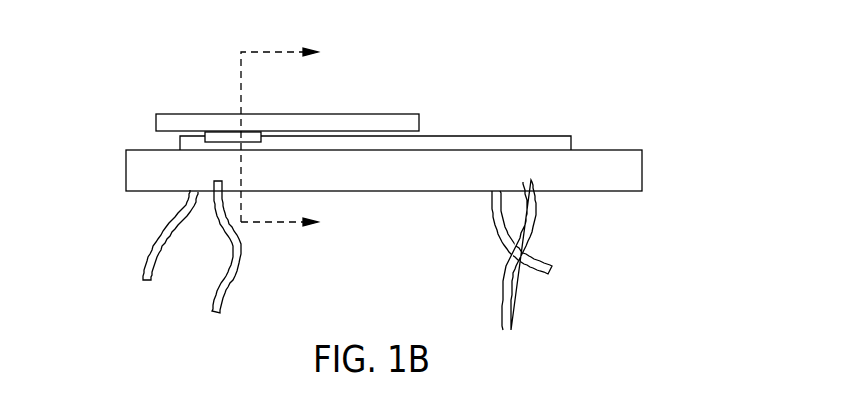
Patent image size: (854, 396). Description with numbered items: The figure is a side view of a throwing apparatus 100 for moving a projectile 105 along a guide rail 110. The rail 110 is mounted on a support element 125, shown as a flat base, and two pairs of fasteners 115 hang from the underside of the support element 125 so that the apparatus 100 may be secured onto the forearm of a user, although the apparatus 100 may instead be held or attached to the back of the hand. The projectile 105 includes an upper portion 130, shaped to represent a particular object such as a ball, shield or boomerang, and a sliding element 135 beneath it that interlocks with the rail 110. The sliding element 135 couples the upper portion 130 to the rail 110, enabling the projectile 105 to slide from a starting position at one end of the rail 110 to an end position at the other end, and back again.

The throwing apparatus 100 is at (394, 168).
The projectile 105 is at (261, 88).
The guide rail 110 is at (542, 136).
The fasteners 115 is at (537, 203).
The support element 125 is at (642, 164).
The top plate 130 is at (419, 123).
The sliding element 135 is at (205, 133).